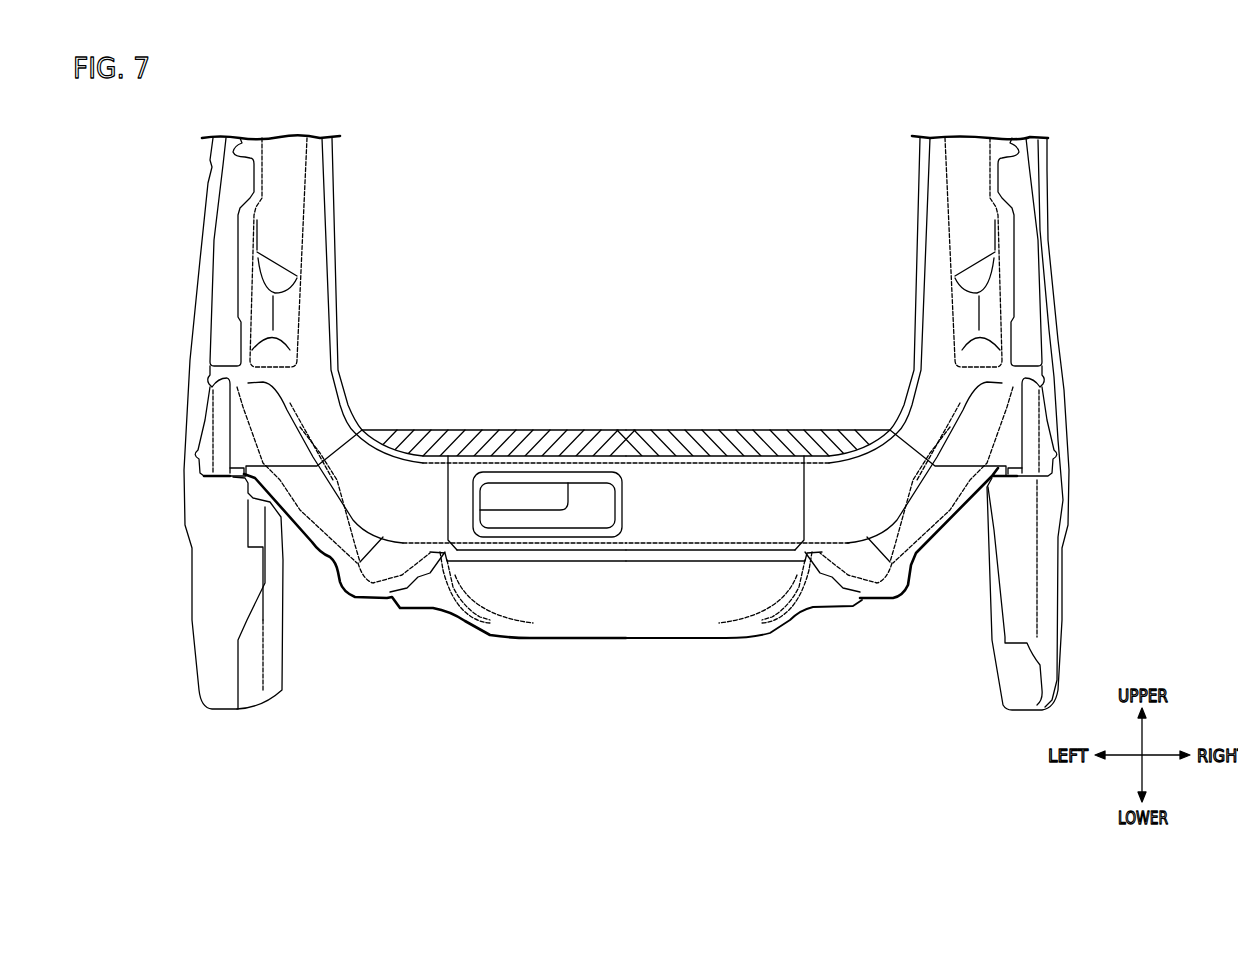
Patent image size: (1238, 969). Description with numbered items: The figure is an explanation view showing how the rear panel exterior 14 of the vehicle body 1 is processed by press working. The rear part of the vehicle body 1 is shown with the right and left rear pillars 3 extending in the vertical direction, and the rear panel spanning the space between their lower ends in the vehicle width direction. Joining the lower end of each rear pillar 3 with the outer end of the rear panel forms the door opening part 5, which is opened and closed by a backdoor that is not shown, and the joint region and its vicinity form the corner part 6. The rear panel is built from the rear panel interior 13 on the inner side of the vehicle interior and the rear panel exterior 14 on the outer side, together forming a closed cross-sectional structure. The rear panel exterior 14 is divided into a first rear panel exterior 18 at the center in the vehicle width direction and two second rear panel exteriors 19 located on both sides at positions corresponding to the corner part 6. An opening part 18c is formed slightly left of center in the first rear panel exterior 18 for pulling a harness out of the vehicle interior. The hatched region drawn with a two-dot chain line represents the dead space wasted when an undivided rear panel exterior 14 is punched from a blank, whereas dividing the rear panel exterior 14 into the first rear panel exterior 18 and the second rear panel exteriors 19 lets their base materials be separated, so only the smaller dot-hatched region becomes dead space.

The vehicle body 1 is at (1123, 199).
The rear pillar 3 is at (338, 228).
The door opening part 5 is at (605, 281).
The corner part 6 is at (408, 423).
The rear panel interior 13 is at (747, 630).
The rear panel exterior 14 is at (442, 733).
The first rear panel exterior 18 is at (698, 562).
The opening part 18c is at (612, 500).
The second rear panel exterior 19 is at (380, 560).